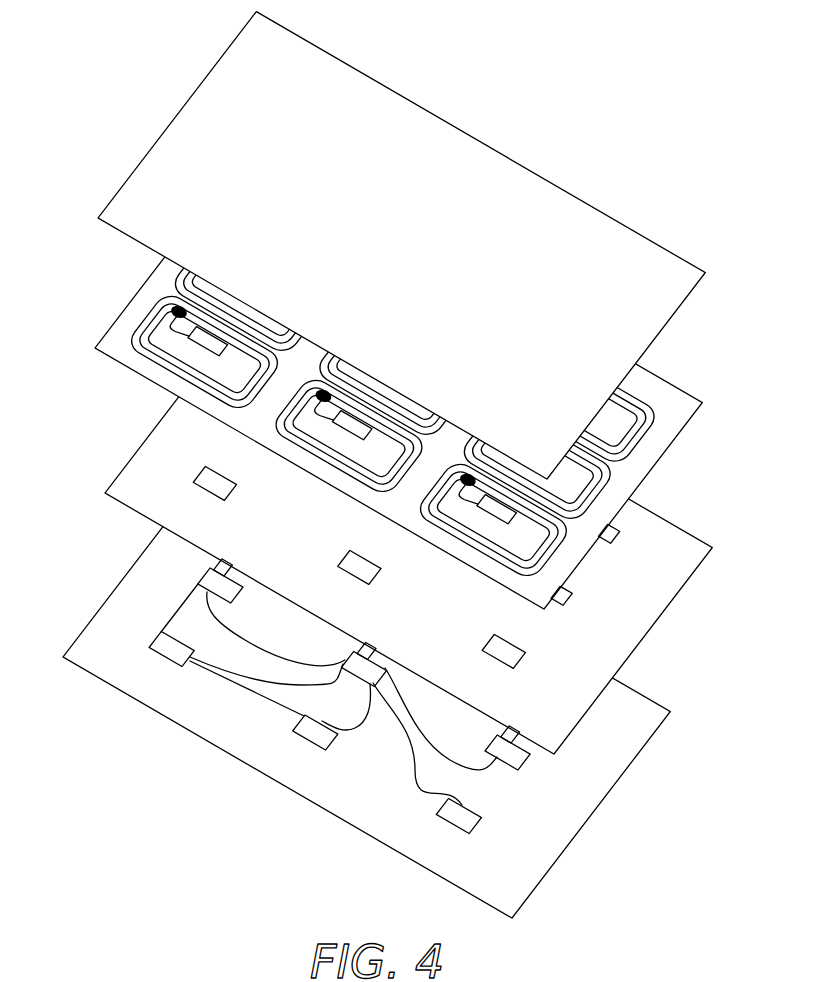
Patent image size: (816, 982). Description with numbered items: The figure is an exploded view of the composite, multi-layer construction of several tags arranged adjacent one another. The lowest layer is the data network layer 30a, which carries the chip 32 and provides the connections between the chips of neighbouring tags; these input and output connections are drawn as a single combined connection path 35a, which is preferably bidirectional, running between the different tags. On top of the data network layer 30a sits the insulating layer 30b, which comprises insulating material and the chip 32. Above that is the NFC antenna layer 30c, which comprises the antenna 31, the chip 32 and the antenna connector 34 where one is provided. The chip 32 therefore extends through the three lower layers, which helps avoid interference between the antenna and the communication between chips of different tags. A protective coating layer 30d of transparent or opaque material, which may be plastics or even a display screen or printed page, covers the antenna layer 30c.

The data network layer 30a is at (108, 597).
The insulating layer 30b is at (132, 455).
The NFC antenna layer 30c is at (108, 331).
The protective coating layer 30d is at (160, 135).
The antenna 31 is at (126, 346).
The chip 32 is at (490, 515).
The antenna connector 34 is at (175, 305).
The combined connection path 35a is at (248, 693).